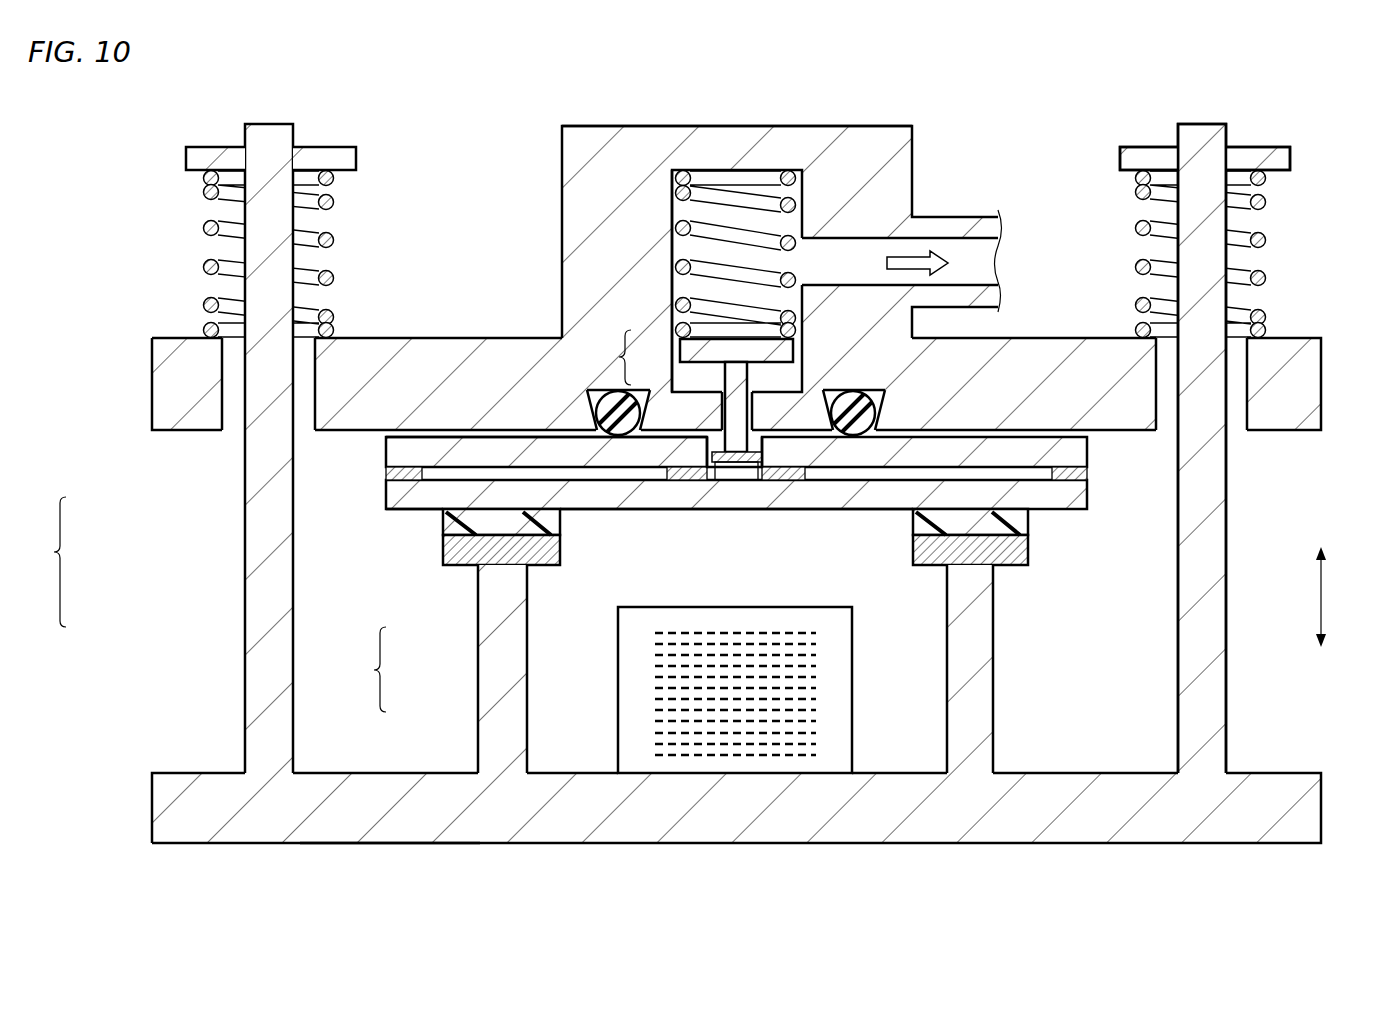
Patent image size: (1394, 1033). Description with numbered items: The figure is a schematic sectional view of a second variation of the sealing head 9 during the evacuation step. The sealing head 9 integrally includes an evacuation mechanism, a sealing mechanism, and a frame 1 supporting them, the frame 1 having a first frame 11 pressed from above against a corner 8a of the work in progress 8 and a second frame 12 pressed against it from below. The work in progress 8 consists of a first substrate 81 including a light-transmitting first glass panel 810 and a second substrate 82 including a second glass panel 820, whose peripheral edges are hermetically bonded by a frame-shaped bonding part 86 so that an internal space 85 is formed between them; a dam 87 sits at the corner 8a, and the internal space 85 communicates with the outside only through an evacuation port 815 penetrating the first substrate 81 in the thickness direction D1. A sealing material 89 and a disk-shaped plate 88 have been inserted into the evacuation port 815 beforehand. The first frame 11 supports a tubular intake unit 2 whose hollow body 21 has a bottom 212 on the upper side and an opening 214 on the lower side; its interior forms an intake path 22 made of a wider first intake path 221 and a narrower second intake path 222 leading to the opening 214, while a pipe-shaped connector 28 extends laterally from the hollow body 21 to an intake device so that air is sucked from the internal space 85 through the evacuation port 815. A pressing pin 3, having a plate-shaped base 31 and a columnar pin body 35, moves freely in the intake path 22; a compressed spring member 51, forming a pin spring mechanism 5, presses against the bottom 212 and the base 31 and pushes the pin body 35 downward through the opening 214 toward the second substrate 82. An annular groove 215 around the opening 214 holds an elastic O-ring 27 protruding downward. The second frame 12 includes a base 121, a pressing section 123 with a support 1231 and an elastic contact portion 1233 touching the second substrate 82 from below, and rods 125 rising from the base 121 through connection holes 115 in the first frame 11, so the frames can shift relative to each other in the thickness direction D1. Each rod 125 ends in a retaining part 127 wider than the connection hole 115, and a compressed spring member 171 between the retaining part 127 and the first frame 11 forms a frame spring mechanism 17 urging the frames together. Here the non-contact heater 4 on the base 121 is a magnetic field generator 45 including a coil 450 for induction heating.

The frame 1 is at (46, 580).
The first frame 11 is at (158, 430).
The second frame 12 is at (152, 773).
The connection hole 115 is at (225, 432).
The base 121 is at (385, 845).
The pressing section 123 is at (675, 641).
The support 1231 is at (485, 700).
The contact portion 1233 is at (472, 545).
The rod 125 is at (243, 246).
The retaining part 127 is at (228, 168).
The frame spring mechanism 17 is at (1292, 179).
The spring member 171 is at (204, 226).
The intake unit 2 is at (833, 126).
The hollow body 21 is at (576, 126).
The bottom 212 is at (699, 126).
The opening 214 is at (710, 470).
The groove 215 is at (866, 389).
The intake path 22 is at (792, 186).
The first intake path 221 is at (685, 292).
The second intake path 222 is at (720, 407).
The O-ring 27 is at (882, 406).
The connector 28 is at (945, 216).
The pressing pin 3 is at (694, 386).
The base 31 is at (695, 355).
The pin body 35 is at (730, 382).
The pin spring mechanism 5 is at (696, 254).
The spring member 51 is at (681, 195).
The work in progress 8 is at (385, 466).
The first substrate 81 is at (1089, 444).
The first glass panel 810 is at (390, 441).
The second substrate 82 is at (1089, 500).
The second glass panel 820 is at (398, 509).
The internal space 85 is at (1042, 478).
The bonding part 86 is at (1073, 473).
The dam 87 is at (795, 480).
The plate 88 is at (736, 481).
The sealing material 89 is at (722, 481).
The evacuation port 815 is at (750, 463).
The corner 8a is at (598, 510).
The non-contact heater 4 is at (782, 690).
The magnetic field generator 45 is at (735, 690).
The coil 450 is at (818, 650).
The sealing head 9 is at (469, 126).
The thickness direction D1 is at (1346, 597).